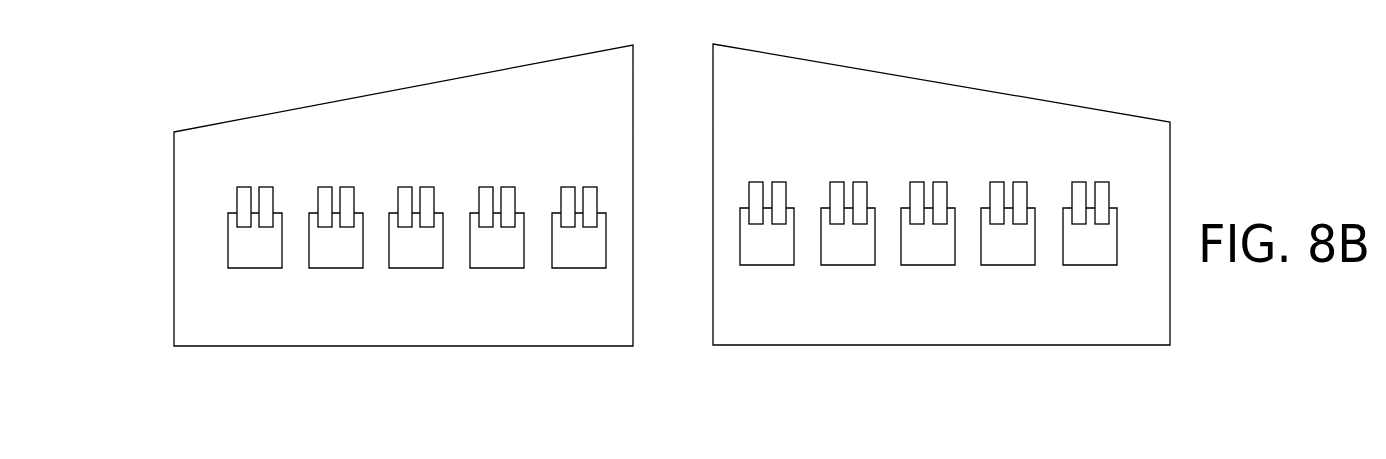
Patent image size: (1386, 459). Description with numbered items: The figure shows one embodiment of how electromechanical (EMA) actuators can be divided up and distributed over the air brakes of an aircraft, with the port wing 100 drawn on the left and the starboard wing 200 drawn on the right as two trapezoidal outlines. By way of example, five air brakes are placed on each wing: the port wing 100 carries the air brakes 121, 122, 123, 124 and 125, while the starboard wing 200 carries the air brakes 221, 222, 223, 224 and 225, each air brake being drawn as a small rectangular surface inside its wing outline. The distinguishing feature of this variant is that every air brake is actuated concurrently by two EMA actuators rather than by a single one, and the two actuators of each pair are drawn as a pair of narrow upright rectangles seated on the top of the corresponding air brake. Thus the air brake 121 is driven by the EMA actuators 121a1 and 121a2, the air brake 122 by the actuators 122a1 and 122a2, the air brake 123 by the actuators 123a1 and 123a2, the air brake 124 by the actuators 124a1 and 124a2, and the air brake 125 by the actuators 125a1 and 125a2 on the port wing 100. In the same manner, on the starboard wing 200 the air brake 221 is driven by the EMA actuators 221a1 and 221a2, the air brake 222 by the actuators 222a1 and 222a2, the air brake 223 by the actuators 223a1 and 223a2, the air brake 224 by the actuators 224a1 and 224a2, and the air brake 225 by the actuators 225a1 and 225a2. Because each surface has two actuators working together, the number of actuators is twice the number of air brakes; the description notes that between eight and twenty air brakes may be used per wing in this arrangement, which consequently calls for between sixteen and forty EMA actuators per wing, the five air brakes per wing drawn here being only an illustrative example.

The wing 100 is at (293, 123).
The air brake 121 is at (579, 253).
The EMA actuator 121a1 is at (590, 200).
The EMA actuator 121a2 is at (569, 200).
The air brake 122 is at (503, 253).
The EMA actuator 122a1 is at (508, 200).
The EMA actuator 122a2 is at (487, 200).
The air brake 123 is at (417, 253).
The EMA actuator 123a1 is at (426, 200).
The EMA actuator 123a2 is at (406, 200).
The air brake 124 is at (327, 255).
The EMA actuator 124a1 is at (346, 200).
The EMA actuator 124a2 is at (326, 200).
The air brake 125 is at (255, 255).
The EMA actuator 125a1 is at (266, 193).
The EMA actuator 125a2 is at (242, 205).
The wing 200 is at (1047, 117).
The air brake 221 is at (767, 252).
The EMA actuator 221a1 is at (755, 192).
The EMA actuator 221a2 is at (778, 192).
The air brake 222 is at (855, 252).
The EMA actuator 222a1 is at (837, 192).
The EMA actuator 222a2 is at (860, 192).
The air brake 223 is at (933, 252).
The EMA actuator 223a1 is at (917, 192).
The EMA actuator 223a2 is at (940, 192).
The air brake 224 is at (1018, 248).
The EMA actuator 224a1 is at (997, 192).
The EMA actuator 224a2 is at (1020, 192).
The air brake 225 is at (1088, 248).
The EMA actuator 225a1 is at (1082, 190).
The EMA actuator 225a2 is at (1137, 175).